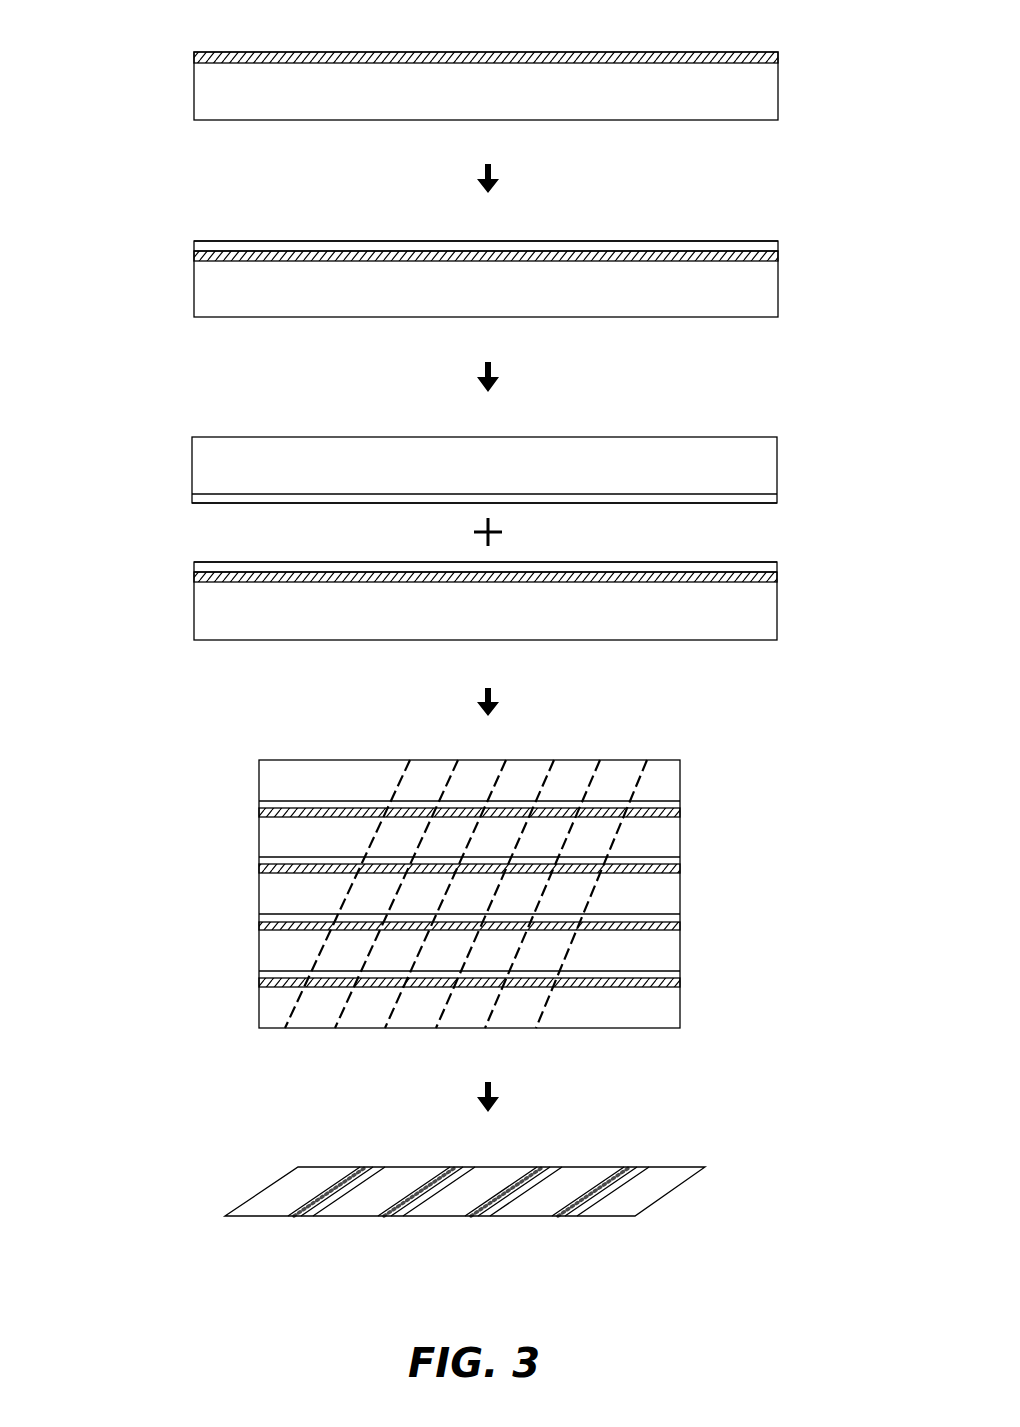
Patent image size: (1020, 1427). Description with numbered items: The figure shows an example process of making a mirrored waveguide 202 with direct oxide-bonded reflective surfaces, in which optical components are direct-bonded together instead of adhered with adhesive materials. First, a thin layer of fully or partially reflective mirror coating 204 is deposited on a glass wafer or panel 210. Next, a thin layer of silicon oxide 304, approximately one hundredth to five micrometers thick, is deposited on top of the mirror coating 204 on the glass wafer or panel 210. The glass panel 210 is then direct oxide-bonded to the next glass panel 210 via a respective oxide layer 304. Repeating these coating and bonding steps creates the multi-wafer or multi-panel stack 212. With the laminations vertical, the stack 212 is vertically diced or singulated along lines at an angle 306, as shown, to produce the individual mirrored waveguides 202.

The mirrored waveguide 202 is at (317, 1165).
The mirror coating 204 is at (699, 49).
The glass wafer or panel 210 is at (426, 63).
The multi-panel stack 212 is at (246, 738).
The silicon oxide layer 304 is at (698, 239).
The dicing angle 306 is at (646, 758).